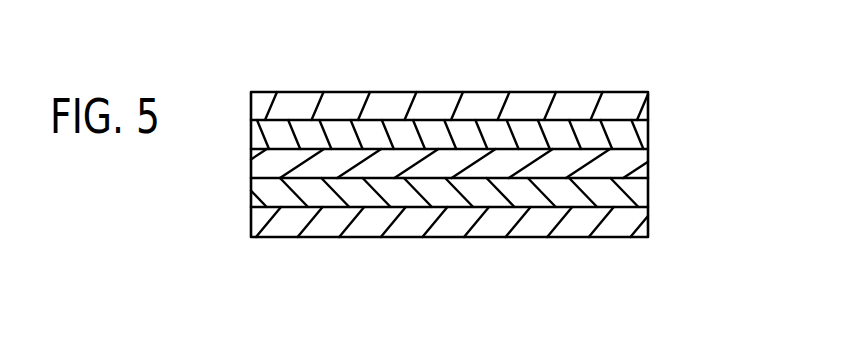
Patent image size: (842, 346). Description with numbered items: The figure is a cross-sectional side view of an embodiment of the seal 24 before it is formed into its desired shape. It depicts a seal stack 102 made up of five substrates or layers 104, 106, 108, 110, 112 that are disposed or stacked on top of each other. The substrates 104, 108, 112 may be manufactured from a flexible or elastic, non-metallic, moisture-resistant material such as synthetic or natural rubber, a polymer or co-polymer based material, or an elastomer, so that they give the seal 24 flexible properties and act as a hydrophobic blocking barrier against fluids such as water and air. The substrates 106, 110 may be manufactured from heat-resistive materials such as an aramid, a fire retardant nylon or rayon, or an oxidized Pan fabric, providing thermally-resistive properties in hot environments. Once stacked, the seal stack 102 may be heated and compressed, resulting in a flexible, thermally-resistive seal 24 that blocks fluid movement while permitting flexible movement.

The seal 24 is at (560, 56).
The seal stack 102 is at (238, 90).
The substrate 104 is at (648, 108).
The substrate 106 is at (648, 139).
The substrate 108 is at (648, 163).
The substrate 110 is at (648, 193).
The substrate 112 is at (648, 222).